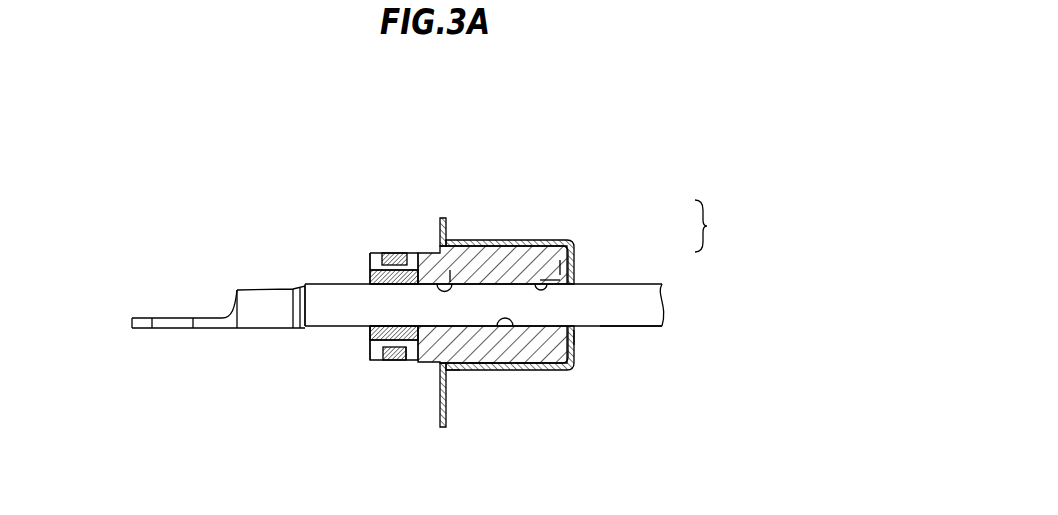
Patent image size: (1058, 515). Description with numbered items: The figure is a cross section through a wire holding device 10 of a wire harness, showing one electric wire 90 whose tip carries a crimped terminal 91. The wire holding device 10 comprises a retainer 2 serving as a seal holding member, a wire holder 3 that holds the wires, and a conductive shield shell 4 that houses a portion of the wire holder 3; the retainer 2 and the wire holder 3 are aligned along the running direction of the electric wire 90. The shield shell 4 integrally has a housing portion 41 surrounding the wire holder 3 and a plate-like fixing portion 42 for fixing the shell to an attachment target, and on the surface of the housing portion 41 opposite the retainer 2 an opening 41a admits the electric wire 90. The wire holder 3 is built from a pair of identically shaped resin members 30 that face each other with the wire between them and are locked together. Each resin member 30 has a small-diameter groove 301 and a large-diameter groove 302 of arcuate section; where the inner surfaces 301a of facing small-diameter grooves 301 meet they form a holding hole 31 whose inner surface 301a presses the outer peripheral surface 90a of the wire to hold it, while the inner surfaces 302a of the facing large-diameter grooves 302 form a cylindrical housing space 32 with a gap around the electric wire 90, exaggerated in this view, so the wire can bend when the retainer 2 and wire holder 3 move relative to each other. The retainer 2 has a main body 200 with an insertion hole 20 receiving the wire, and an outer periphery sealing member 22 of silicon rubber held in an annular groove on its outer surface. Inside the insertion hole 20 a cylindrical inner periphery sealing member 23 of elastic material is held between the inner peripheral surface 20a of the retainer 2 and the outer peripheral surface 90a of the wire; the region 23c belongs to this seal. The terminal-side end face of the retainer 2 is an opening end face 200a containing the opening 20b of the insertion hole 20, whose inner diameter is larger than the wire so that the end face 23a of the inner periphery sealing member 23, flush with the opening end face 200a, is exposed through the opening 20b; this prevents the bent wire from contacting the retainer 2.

The retainer 2 is at (335, 212).
The wire holder 3 is at (710, 226).
The shield shell 4 is at (584, 182).
The wire holding device 10 is at (448, 190).
The insertion hole 20 is at (365, 277).
The inner peripheral surface 20a is at (367, 268).
The opening 20b is at (370, 328).
The outer periphery sealing member 22 is at (395, 360).
The inner periphery sealing member 23 is at (407, 267).
The end face 23a is at (370, 340).
The shield member portion 23c is at (395, 258).
The resin member 30 is at (557, 274).
The holding hole 31 is at (532, 280).
The housing space 32 is at (455, 373).
The housing portion 41 is at (518, 246).
The opening 41a is at (578, 330).
The fixing portion 42 is at (440, 417).
The electric wire 90 is at (648, 305).
The outer peripheral surface 90a is at (643, 326).
The terminal 91 is at (177, 323).
The main body 200 is at (412, 357).
The opening end face 200a is at (370, 360).
The small-diameter groove 301 is at (525, 367).
The inner surface 301a is at (562, 270).
The large-diameter groove 302 is at (483, 375).
The inner surface 302a is at (452, 282).